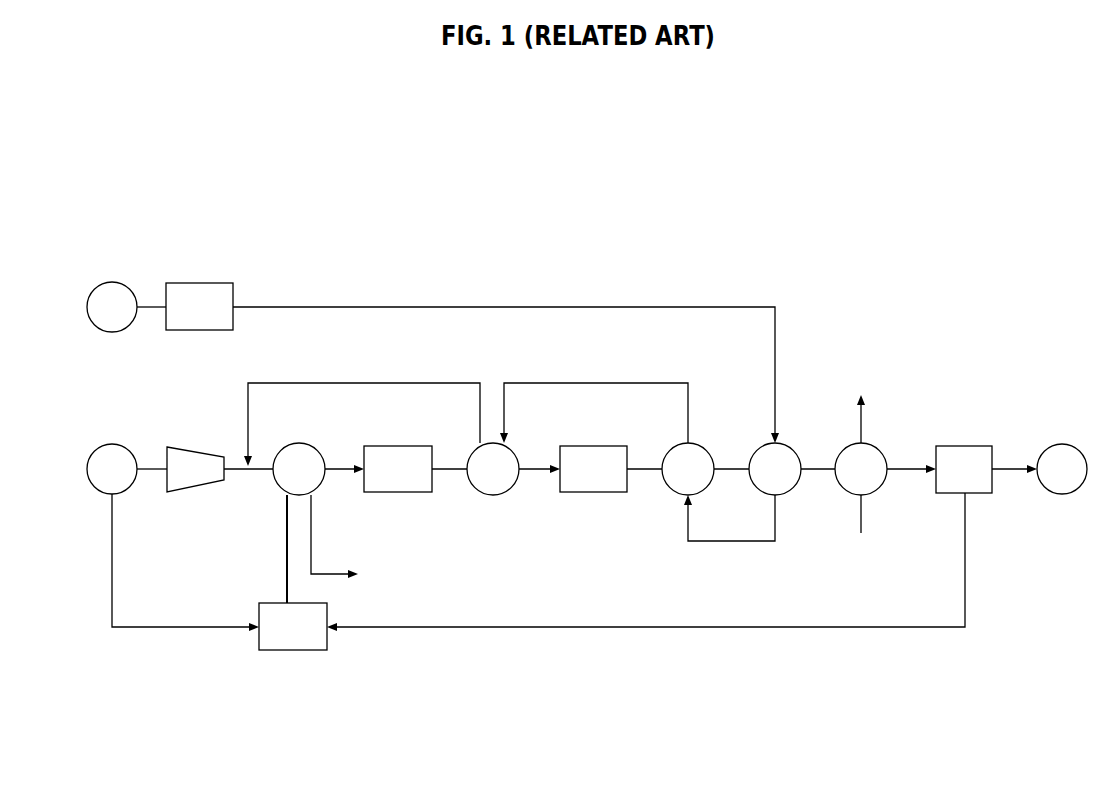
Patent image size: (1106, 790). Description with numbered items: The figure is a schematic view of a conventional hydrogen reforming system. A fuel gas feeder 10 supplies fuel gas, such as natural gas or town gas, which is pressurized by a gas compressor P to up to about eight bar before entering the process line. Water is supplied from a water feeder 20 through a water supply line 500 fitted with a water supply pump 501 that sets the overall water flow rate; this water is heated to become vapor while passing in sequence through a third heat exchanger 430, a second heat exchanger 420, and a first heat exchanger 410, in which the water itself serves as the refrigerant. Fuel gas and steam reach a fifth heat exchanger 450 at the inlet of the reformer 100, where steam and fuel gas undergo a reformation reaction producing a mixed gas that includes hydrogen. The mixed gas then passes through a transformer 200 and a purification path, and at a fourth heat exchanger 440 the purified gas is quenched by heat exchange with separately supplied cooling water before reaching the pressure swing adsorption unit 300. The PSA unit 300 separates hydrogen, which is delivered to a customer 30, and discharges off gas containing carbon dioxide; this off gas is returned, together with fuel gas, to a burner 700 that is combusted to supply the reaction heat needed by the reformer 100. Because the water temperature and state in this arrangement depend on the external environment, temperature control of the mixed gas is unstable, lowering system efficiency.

The fuel gas feeder 10 is at (112, 444).
The water feeder 20 is at (112, 283).
The customer 30 is at (1062, 444).
The gas compressor P is at (195, 447).
The reformer 100 is at (400, 492).
The transformer 200 is at (587, 492).
The pressure swing adsorption (PSA) unit 300 is at (965, 446).
The first heat exchanger 410 is at (493, 495).
The second heat exchanger 420 is at (672, 492).
The third heat exchanger 430 is at (790, 490).
The fourth heat exchanger 440 is at (878, 489).
The fifth heat exchanger 450 is at (281, 487).
The water supply line 500 is at (430, 298).
The water supply pump 501 is at (207, 283).
The burner 700 is at (290, 650).